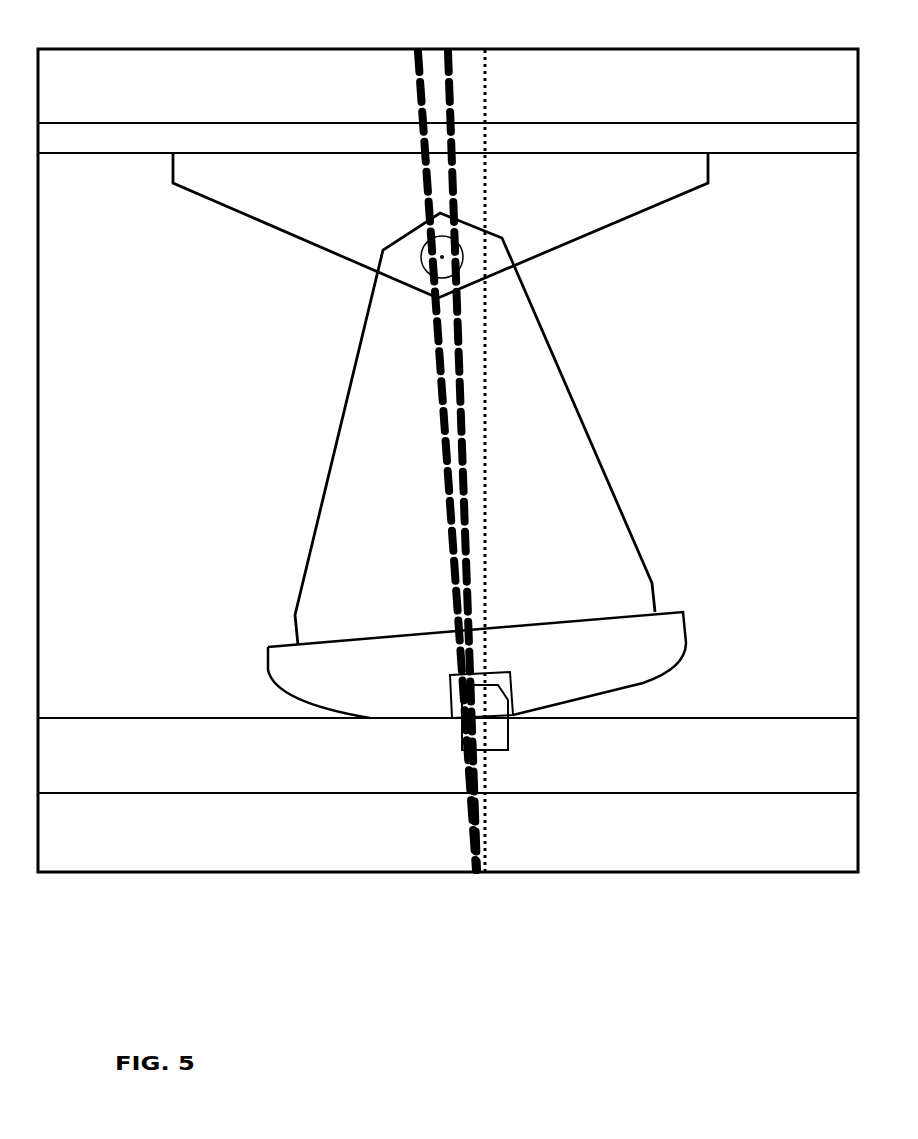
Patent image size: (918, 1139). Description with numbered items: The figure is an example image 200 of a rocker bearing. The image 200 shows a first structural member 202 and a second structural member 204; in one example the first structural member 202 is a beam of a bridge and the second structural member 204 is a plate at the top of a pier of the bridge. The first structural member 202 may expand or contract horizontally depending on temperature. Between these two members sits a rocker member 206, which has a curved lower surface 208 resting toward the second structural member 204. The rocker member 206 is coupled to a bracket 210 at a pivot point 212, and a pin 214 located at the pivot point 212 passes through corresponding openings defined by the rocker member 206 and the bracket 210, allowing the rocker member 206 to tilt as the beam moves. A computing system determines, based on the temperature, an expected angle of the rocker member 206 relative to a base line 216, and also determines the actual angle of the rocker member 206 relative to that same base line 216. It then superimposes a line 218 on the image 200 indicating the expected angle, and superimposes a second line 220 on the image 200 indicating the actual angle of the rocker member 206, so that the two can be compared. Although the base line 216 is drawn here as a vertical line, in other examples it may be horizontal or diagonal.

The image 200 is at (785, 47).
The first structural member 202 is at (742, 122).
The second structural member 204 is at (748, 718).
The rocker member 206 is at (597, 450).
The curved lower surface 208 is at (643, 685).
The bracket 210 is at (607, 228).
The pivot point 212 is at (437, 258).
The pin 214 is at (420, 260).
The base line 216 is at (487, 93).
The line 218 is at (460, 213).
The line 220 is at (420, 115).